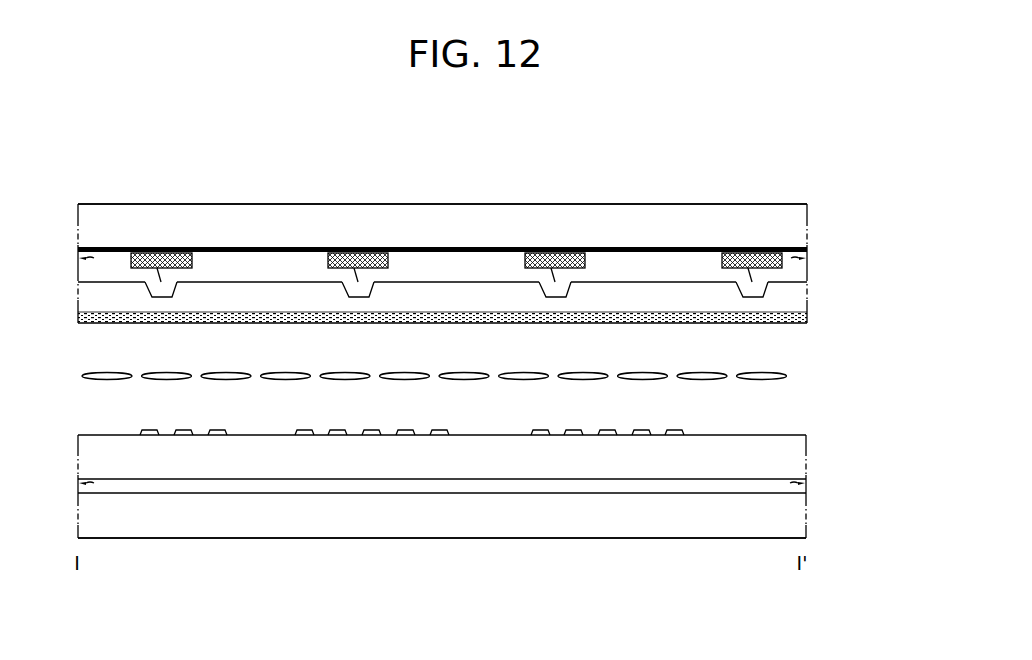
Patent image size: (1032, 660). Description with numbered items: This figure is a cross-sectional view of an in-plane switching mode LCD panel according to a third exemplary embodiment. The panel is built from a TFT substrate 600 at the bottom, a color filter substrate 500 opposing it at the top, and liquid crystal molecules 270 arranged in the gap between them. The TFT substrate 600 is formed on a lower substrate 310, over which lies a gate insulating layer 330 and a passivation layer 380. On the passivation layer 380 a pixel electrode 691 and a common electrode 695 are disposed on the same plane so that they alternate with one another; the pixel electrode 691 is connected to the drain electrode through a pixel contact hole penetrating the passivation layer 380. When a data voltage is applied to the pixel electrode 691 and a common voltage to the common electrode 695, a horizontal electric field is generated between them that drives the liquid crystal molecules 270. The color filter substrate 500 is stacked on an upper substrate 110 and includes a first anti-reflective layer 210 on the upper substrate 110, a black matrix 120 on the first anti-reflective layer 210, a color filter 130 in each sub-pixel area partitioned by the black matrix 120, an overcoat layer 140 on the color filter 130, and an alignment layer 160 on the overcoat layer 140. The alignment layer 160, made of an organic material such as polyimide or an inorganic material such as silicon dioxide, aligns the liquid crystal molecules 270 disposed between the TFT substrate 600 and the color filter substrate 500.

The upper substrate 110 is at (438, 210).
The black matrix 120 is at (352, 280).
The color filter 130 is at (282, 255).
The overcoat layer 140 is at (518, 285).
The alignment layer 160 is at (598, 318).
The first anti-reflective layer 210 is at (674, 247).
The liquid crystal molecules 270 is at (816, 375).
The lower substrate 310 is at (642, 533).
The gate insulating layer 330 is at (572, 490).
The passivation layer 380 is at (132, 473).
The color filter substrate 500 is at (479, 239).
The TFT substrate 600 is at (479, 508).
The pixel electrode 691 is at (304, 436).
The common electrode 695 is at (337, 436).